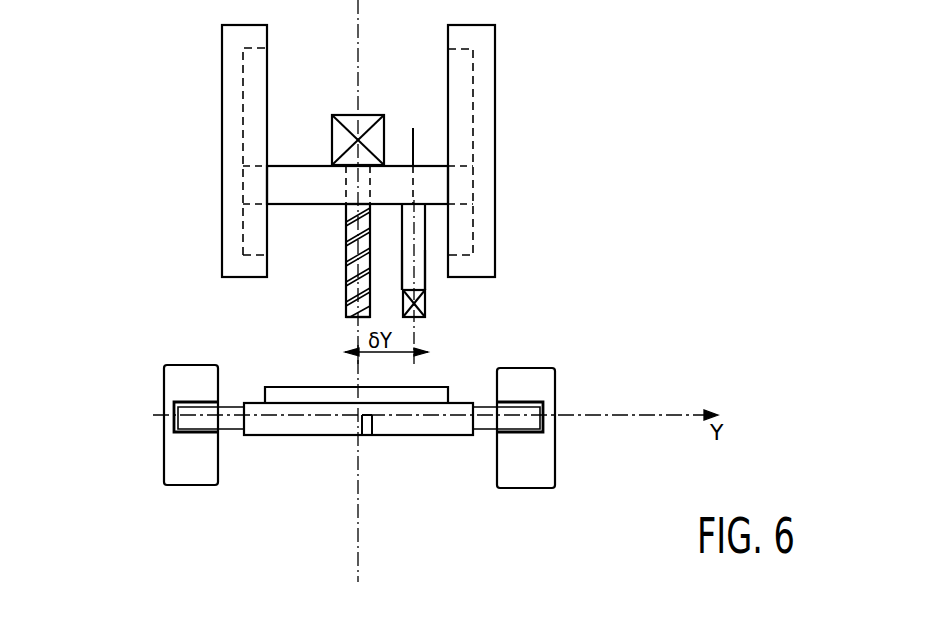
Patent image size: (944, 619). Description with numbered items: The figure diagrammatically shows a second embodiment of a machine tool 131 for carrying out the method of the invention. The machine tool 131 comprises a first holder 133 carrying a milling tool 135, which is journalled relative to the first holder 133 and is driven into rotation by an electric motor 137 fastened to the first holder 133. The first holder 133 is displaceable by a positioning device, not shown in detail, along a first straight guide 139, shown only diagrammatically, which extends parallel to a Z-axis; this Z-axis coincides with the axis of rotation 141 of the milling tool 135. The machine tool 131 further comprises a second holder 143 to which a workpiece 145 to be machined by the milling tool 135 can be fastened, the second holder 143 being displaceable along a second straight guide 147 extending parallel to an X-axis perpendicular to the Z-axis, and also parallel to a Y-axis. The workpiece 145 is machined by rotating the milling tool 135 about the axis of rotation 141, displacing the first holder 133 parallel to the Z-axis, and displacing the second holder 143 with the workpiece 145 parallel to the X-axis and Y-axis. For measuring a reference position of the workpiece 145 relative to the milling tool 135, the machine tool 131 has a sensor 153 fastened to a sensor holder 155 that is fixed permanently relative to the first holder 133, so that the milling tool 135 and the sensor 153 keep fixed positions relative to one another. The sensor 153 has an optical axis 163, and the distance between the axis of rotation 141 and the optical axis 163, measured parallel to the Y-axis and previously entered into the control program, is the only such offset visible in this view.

The machine tool 131 is at (185, 493).
The first holder 133 is at (293, 166).
The milling tool 135 is at (346, 244).
The electric motor 137 is at (372, 113).
The first straight guide 139 is at (267, 33).
The axis of rotation 141 is at (355, 328).
The second holder 143 is at (429, 435).
The workpiece 145 is at (430, 392).
The second straight guide 147 is at (180, 432).
The sensor 153 is at (426, 304).
The sensor holder 155 is at (403, 270).
The optical axis 163 is at (413, 158).